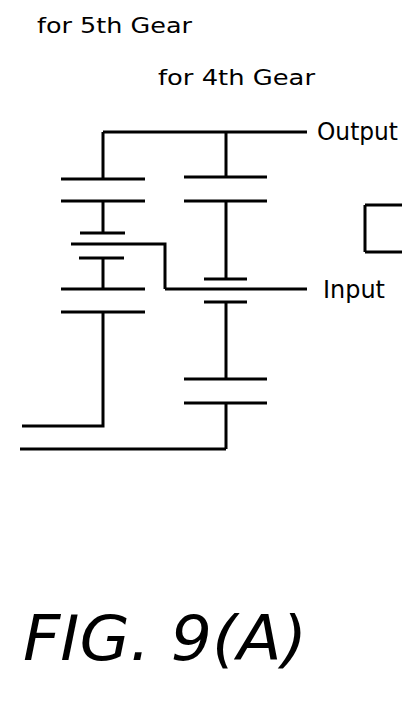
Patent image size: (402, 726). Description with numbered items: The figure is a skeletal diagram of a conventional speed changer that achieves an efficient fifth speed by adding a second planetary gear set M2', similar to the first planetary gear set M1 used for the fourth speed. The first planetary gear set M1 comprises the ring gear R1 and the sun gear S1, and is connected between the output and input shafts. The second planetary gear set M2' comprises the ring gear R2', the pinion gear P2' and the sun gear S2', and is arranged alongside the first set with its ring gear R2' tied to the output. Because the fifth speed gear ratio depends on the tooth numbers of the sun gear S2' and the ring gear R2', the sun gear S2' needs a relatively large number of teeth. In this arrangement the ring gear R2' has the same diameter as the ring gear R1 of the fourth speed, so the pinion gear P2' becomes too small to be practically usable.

The ring gear R2' is at (79, 166).
The pinion gear P2' is at (90, 245).
The sun gear S2' is at (80, 357).
The ring gear R1 is at (246, 166).
The sun gear S1 is at (246, 414).
The first planetary gear set M1 is at (226, 462).
The second planetary gear set M2' is at (94, 496).